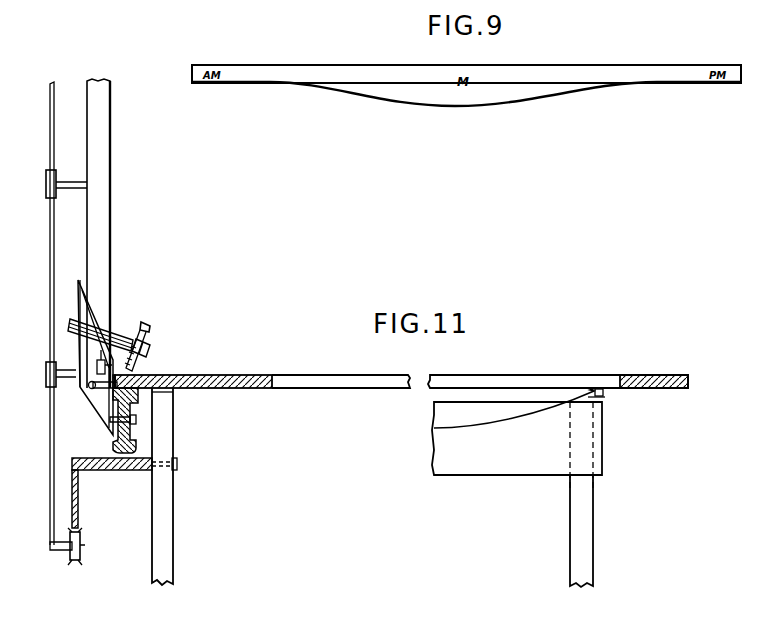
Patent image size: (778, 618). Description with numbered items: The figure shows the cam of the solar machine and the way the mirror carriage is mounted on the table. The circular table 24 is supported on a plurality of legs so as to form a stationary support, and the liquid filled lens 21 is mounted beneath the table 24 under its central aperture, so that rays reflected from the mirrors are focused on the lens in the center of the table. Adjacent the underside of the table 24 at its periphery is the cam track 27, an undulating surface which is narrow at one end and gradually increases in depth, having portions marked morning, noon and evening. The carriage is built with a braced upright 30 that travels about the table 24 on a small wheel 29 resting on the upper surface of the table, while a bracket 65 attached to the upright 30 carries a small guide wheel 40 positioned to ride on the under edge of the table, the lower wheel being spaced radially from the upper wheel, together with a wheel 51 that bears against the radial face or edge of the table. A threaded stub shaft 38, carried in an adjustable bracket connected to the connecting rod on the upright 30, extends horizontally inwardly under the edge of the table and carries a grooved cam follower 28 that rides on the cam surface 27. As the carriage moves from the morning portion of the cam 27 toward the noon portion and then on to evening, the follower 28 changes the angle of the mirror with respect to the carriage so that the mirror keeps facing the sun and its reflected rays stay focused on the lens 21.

In FIG. 11, the liquid filled lens 21 is at (487, 428).
In FIG. 11, the table 24 is at (258, 374).
In FIG. 9, the cam track 27 is at (450, 106).
In FIG. 11, the cam track 27 is at (79, 507).
In FIG. 11, the cam follower 28 is at (74, 565).
In FIG. 11, the wheel 29 is at (150, 331).
In FIG. 11, the upright 30 is at (110, 162).
In FIG. 11, the stub shaft 38 is at (55, 550).
In FIG. 11, the guide wheel 40 is at (130, 437).
In FIG. 11, the wheel 51 is at (90, 388).
In FIG. 11, the bracket 65 is at (90, 412).